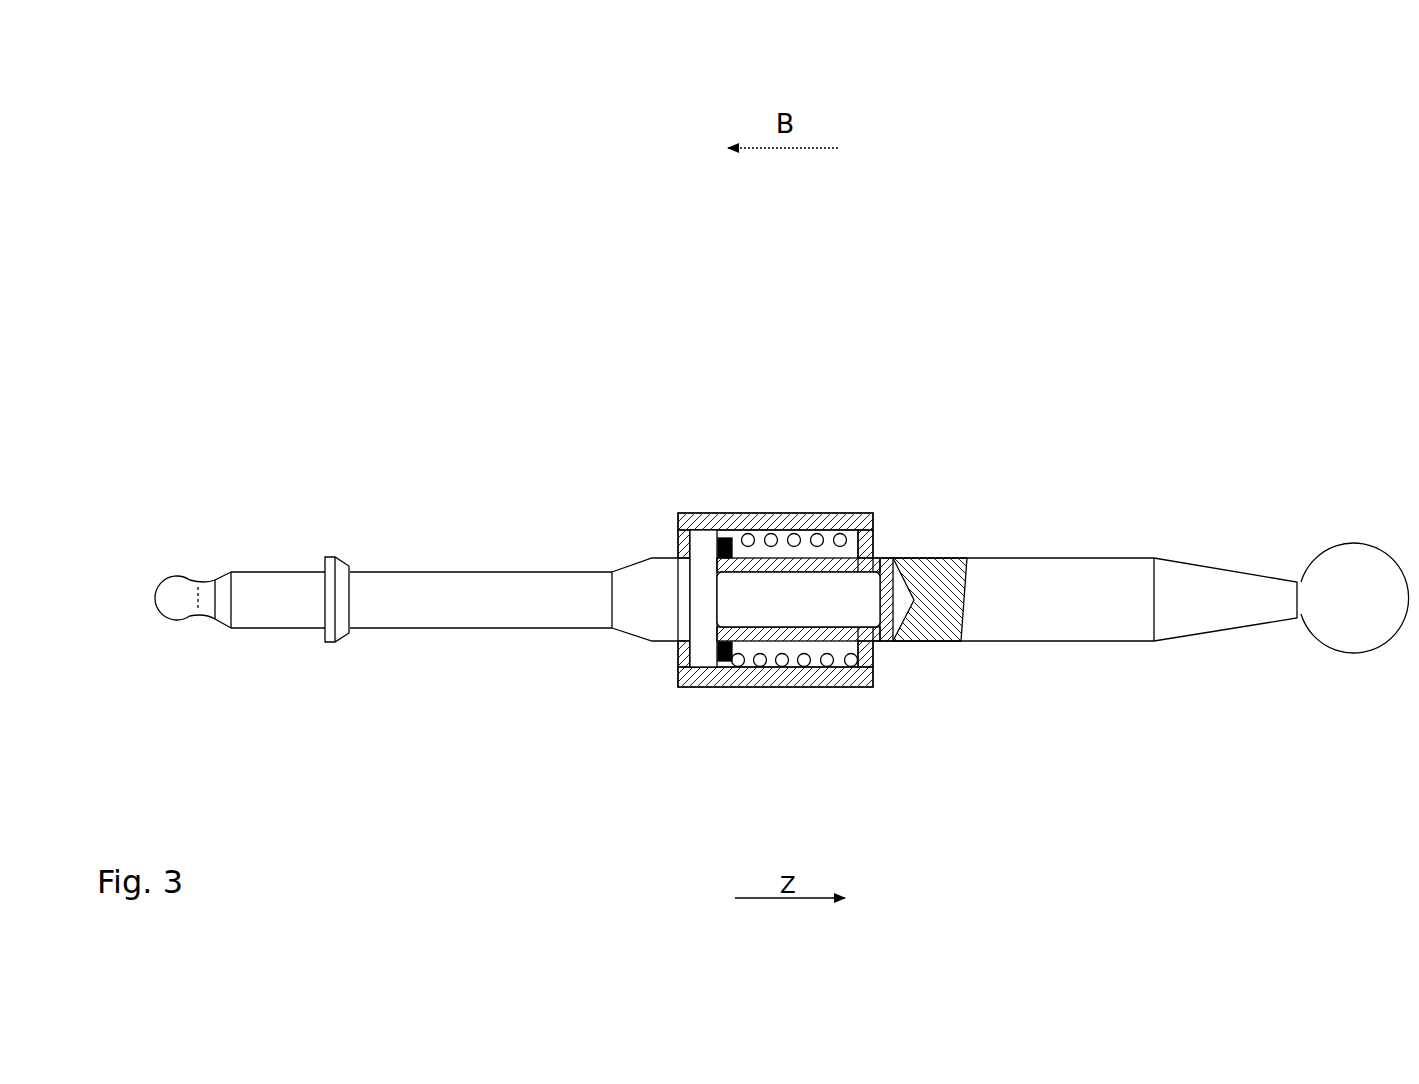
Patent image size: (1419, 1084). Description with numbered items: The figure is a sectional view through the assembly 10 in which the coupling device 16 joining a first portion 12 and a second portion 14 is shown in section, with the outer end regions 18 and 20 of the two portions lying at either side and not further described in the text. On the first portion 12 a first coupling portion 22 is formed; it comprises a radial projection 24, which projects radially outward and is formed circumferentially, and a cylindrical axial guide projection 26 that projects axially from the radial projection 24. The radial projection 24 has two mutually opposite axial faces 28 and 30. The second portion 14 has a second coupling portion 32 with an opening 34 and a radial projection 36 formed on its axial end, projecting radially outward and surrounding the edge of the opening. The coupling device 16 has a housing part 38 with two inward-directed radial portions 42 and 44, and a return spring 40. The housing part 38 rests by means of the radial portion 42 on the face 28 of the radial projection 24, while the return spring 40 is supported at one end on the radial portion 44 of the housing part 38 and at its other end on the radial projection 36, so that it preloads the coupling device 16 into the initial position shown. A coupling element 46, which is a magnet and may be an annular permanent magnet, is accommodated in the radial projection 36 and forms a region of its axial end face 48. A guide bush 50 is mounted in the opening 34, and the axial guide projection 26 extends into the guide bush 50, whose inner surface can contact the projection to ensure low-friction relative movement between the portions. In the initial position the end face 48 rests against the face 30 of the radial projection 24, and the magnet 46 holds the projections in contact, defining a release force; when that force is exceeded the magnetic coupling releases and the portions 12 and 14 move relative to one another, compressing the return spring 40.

The actuating device 10 is at (1194, 221).
The first portion 12 is at (462, 530).
The second portion 14 is at (1050, 550).
The coupling device 16 is at (773, 367).
The rod tip 18 is at (238, 560).
The ball head 20 is at (1352, 530).
The first coupling portion 22 is at (643, 543).
The radial projection 24 is at (697, 665).
The axial guide projection 26 is at (810, 598).
The axial face 28 is at (688, 642).
The axial face 30 is at (718, 660).
The second coupling portion 32 is at (917, 652).
The opening 34 is at (876, 562).
The radial projection 36 is at (733, 547).
The housing part 38 is at (788, 527).
The return spring 40 is at (820, 545).
The radial portion 42 is at (678, 548).
The radial portion 44 is at (872, 663).
The coupling element 46 is at (723, 543).
The axial end face 48 is at (718, 543).
The guide bush 50 is at (823, 635).